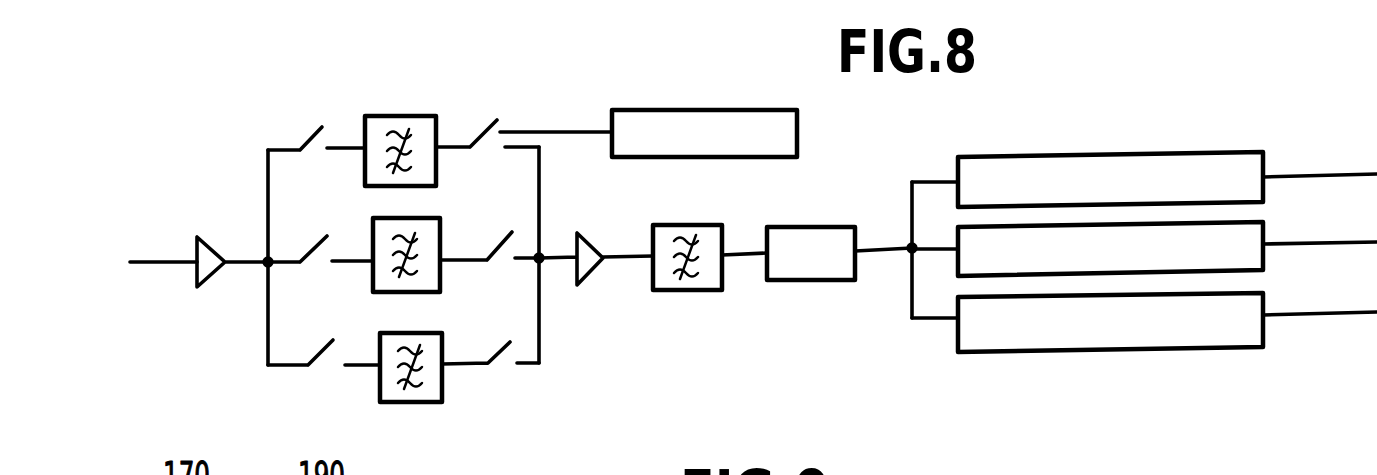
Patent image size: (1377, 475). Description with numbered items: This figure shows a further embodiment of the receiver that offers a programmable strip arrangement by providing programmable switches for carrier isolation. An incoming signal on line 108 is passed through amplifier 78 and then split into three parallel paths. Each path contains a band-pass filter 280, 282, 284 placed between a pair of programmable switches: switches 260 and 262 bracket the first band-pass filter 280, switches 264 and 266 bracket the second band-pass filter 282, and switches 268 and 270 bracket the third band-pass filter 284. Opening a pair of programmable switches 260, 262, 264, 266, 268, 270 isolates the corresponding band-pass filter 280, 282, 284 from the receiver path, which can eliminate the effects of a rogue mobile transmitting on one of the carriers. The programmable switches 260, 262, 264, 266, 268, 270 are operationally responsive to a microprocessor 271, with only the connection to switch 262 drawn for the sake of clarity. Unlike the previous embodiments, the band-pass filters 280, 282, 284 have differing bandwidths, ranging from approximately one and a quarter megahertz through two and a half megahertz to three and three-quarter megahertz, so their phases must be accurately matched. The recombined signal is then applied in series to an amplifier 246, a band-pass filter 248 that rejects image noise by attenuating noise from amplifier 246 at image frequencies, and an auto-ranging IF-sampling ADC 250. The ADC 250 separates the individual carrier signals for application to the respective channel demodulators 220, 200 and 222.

The input signal line 108 is at (149, 262).
The amplifier 78 is at (200, 235).
The programmable switch 260 is at (310, 130).
The programmable switch 264 is at (316, 246).
The programmable switch 268 is at (323, 365).
The band-pass filter 280 is at (415, 116).
The band-pass filter 282 is at (467, 209).
The band-pass filter 284 is at (443, 402).
The programmable switch 262 is at (482, 114).
The programmable switch 266 is at (496, 262).
The programmable switch 270 is at (498, 360).
The microprocessor 271 is at (648, 110).
The amplifier 246 is at (587, 240).
The band-pass filter 248 is at (707, 226).
The auto-ranging IF-sampling ADC 250 is at (818, 227).
The channel demodulator 220 is at (1045, 157).
The channel demodulator 200 is at (1250, 236).
The channel demodulator 222 is at (1143, 335).